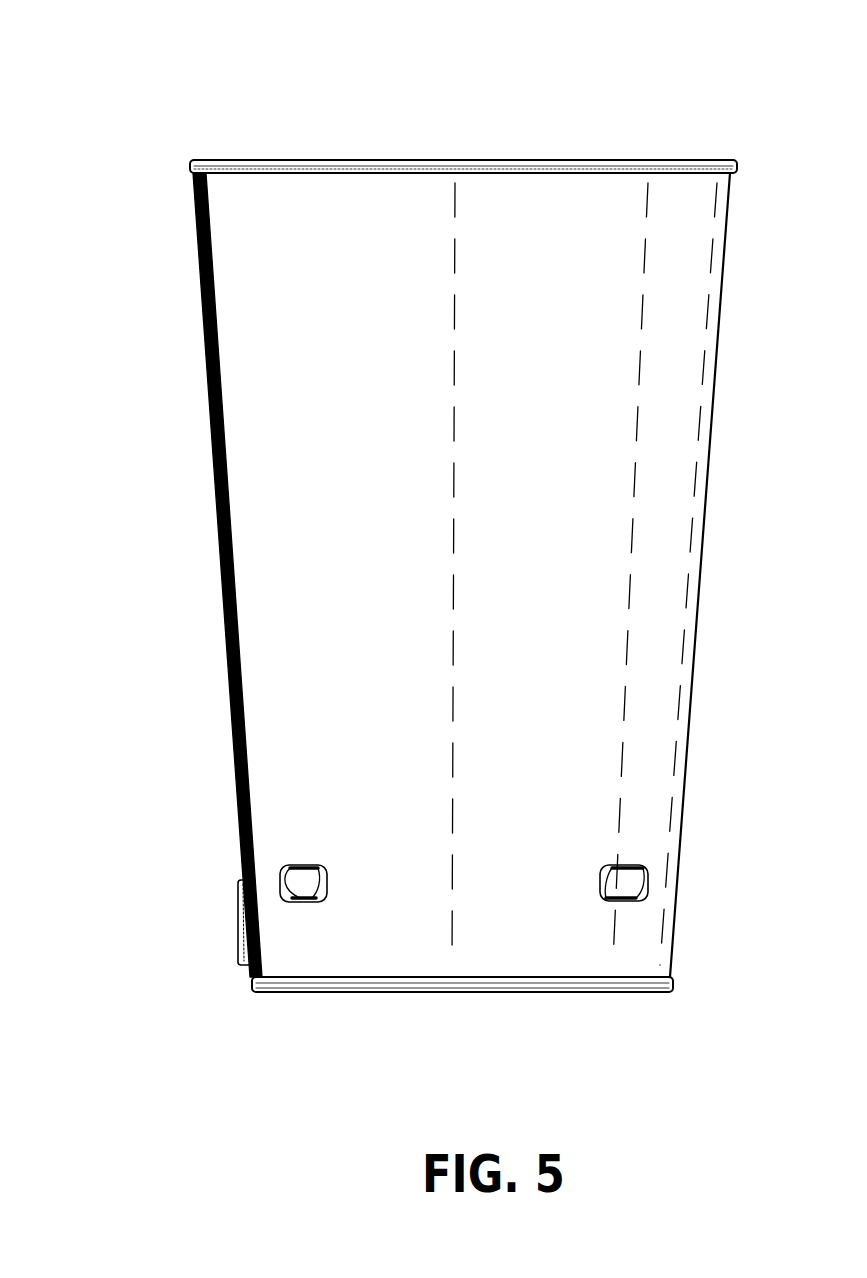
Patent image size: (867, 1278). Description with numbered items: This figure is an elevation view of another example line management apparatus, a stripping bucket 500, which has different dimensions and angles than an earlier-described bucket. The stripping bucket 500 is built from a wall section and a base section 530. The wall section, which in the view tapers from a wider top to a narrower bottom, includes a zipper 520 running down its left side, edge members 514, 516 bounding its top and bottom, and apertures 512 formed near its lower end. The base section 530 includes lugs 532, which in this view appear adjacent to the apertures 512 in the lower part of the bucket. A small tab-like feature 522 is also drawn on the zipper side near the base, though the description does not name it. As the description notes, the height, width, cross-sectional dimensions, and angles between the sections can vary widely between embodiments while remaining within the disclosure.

The stripping bucket 500 is at (220, 110).
The apertures 512 is at (323, 876).
The edge member 514 is at (425, 160).
The edge member 516 is at (640, 985).
The zipper 520 is at (218, 512).
The tab 522 is at (240, 945).
The base section 530 is at (458, 992).
The lugs 532 is at (303, 885).